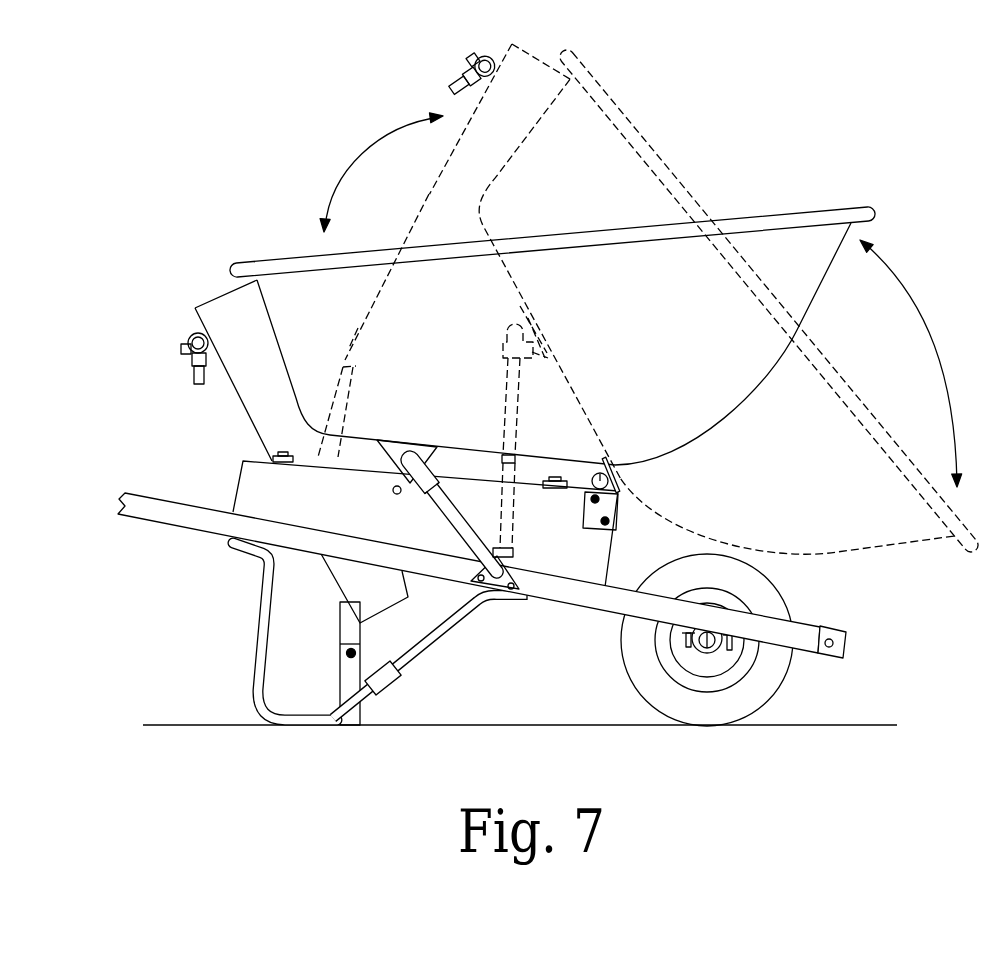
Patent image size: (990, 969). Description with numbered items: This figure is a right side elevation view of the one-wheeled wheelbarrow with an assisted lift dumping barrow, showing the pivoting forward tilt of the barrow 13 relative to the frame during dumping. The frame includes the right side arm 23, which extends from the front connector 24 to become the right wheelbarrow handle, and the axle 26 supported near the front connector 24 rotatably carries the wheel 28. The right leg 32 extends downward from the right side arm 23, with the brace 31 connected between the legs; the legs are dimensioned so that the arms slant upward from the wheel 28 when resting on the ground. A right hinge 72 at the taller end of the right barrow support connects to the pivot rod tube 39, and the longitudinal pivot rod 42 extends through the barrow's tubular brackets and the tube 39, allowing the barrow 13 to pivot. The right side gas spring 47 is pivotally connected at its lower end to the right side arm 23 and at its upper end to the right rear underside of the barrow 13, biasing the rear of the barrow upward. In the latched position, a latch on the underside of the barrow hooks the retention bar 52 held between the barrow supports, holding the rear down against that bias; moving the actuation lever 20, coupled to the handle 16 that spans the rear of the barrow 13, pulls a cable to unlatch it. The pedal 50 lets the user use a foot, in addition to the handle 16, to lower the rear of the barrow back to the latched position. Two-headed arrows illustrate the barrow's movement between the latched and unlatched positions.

The barrow 13 is at (803, 213).
The handle 16 is at (190, 335).
The actuation lever 20 is at (183, 349).
The right side arm 23 is at (580, 598).
The front connector 24 is at (847, 648).
The axle 26 is at (692, 636).
The wheel 28 is at (708, 713).
The brace 31 is at (392, 680).
The right leg 32 is at (255, 687).
The pivot rod tube 39 is at (593, 473).
The longitudinal pivot rod 42 is at (608, 460).
The right side gas spring 47 is at (447, 513).
The pedal 50 is at (347, 722).
The retention bar 52 is at (393, 490).
The right hinge 72 is at (583, 512).